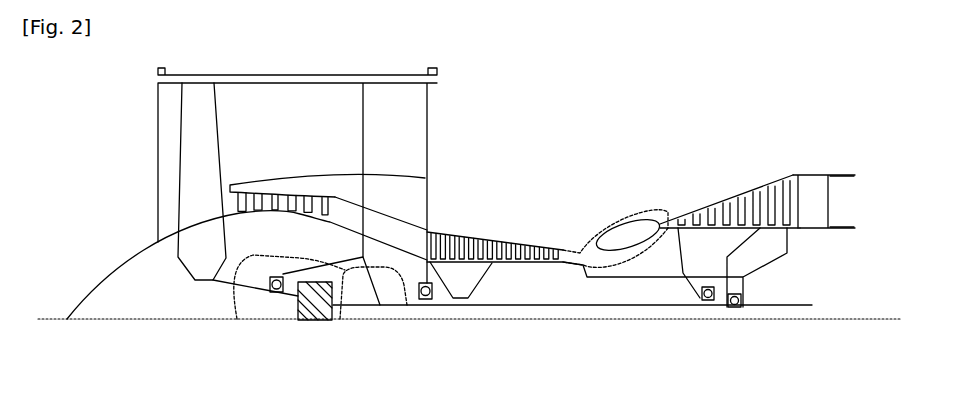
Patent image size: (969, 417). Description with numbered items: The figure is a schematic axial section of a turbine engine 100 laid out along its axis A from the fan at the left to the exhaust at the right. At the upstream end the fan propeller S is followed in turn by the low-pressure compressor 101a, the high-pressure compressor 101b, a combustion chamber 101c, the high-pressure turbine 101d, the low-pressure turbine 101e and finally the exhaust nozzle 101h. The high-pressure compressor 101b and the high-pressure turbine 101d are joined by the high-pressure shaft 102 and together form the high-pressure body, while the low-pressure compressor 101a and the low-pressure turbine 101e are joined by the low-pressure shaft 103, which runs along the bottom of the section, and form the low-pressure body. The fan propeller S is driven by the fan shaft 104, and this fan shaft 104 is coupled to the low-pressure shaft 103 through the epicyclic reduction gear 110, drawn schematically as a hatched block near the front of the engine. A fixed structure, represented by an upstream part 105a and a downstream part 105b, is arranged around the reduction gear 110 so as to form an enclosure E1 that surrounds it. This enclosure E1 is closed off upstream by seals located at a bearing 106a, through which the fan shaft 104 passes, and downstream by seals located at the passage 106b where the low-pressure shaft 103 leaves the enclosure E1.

The fan propeller S is at (193, 137).
The turbine engine 100 is at (540, 153).
The low-pressure compressor 101a is at (256, 183).
The high-pressure compressor 101b is at (460, 230).
The combustor 101c is at (620, 240).
The high-pressure turbine 101d is at (668, 222).
The low-pressure turbine 101e is at (790, 174).
The exhaust nozzle 101h is at (838, 195).
The high-pressure shaft 102 is at (615, 278).
The low-pressure shaft 103 is at (523, 308).
The fan shaft 104 is at (257, 292).
The upstream part 105a is at (238, 320).
The downstream part 105b is at (405, 305).
The bearing 106a is at (275, 295).
The passage 106b is at (385, 307).
The epicyclic reduction gear 110 is at (317, 320).
The enclosure E1 is at (350, 275).
The axis A is at (50, 319).